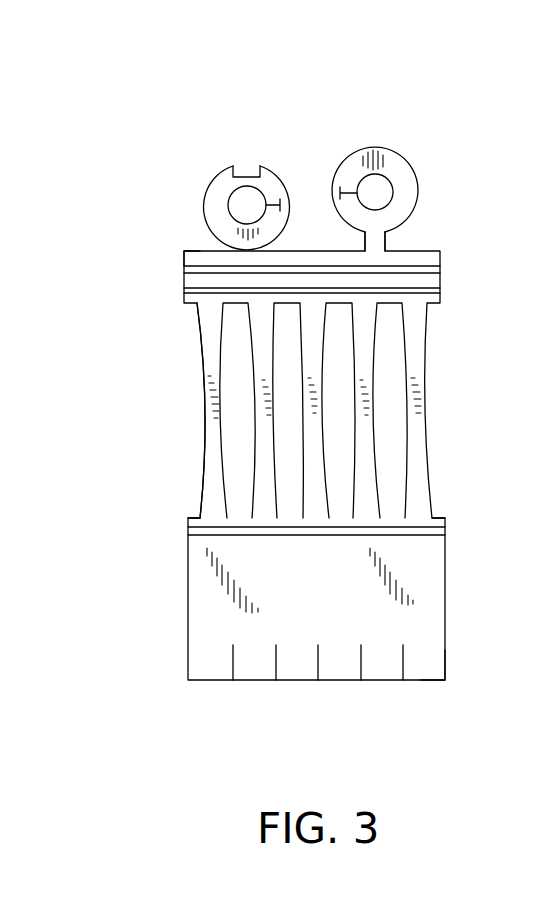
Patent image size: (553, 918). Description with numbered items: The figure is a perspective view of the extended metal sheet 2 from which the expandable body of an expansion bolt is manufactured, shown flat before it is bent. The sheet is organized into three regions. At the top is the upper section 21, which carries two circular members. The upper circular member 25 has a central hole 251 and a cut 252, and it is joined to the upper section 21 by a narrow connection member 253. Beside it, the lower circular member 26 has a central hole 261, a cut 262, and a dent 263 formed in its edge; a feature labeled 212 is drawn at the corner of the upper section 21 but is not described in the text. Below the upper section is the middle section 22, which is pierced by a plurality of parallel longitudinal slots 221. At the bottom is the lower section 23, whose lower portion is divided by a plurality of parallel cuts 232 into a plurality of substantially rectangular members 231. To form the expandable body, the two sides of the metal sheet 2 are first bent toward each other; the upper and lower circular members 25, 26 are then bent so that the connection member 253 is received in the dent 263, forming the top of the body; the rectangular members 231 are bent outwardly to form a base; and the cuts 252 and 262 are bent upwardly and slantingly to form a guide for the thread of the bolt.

The extended metal sheet 2 is at (477, 347).
The upper section 21 is at (448, 285).
The edge of top plate 212 is at (188, 246).
The middle section 22 is at (435, 462).
The longitudinal slots 221 is at (233, 430).
The lower section 23 is at (433, 600).
The rectangular members 231 is at (425, 667).
The parallel cuts 232 is at (402, 662).
The upper circular member 25 is at (413, 190).
The central hole 251 is at (380, 183).
The cut 252 is at (345, 190).
The connection member 253 is at (388, 242).
The lower circular member 26 is at (212, 212).
The central hole 261 is at (240, 205).
The cut 262 is at (277, 203).
The dent 263 is at (243, 168).